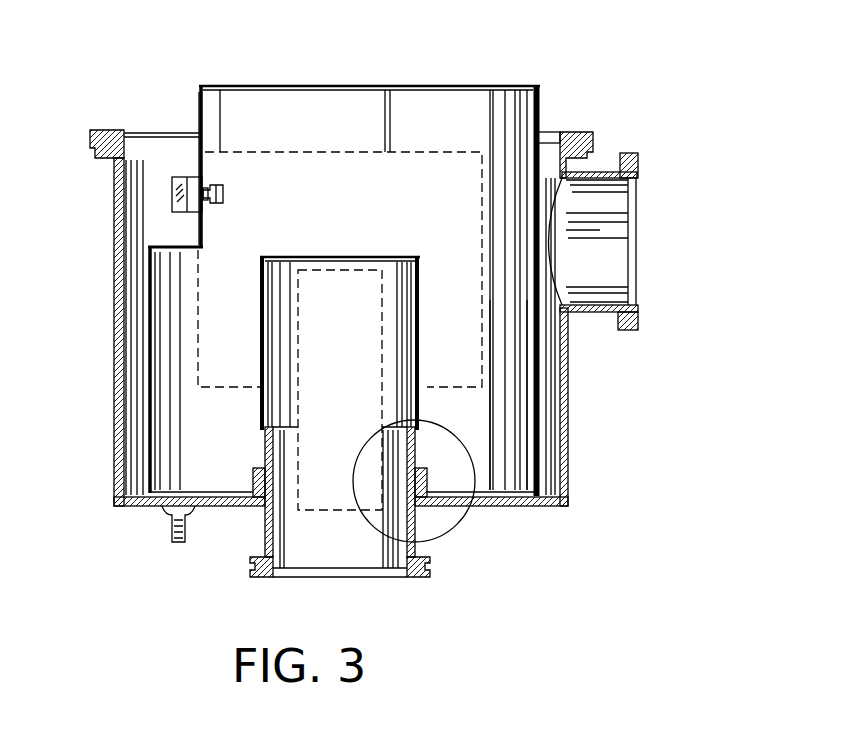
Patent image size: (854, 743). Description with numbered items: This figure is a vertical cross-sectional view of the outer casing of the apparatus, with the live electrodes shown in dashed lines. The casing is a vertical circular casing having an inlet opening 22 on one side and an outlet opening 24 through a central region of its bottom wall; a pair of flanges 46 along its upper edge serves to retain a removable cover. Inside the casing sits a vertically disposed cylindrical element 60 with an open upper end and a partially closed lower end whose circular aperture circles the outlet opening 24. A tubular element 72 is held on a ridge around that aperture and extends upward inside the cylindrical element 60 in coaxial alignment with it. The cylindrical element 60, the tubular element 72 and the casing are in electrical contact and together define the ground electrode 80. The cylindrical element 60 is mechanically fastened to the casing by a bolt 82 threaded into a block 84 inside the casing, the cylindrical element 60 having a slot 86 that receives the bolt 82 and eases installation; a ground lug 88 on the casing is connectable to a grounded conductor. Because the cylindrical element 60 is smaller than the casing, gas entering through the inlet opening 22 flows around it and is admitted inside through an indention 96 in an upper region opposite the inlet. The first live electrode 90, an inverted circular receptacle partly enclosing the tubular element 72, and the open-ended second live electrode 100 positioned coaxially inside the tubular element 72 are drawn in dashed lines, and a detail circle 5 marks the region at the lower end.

The detail view circle of FIG. 5 is at (455, 538).
The inlet opening 22 is at (640, 228).
The outlet opening 24 is at (373, 578).
The flanges 46 is at (595, 142).
The cylindrical element 60 is at (288, 88).
The tubular element 72 is at (410, 407).
The ground electrode 80 is at (410, 348).
The bolt 82 is at (225, 194).
The block 84 is at (178, 177).
The slot 86 is at (204, 205).
The ground lug 88 is at (172, 525).
The first live electrode 90 is at (421, 152).
The indention 96 is at (200, 95).
The second live electrode 100 is at (350, 270).